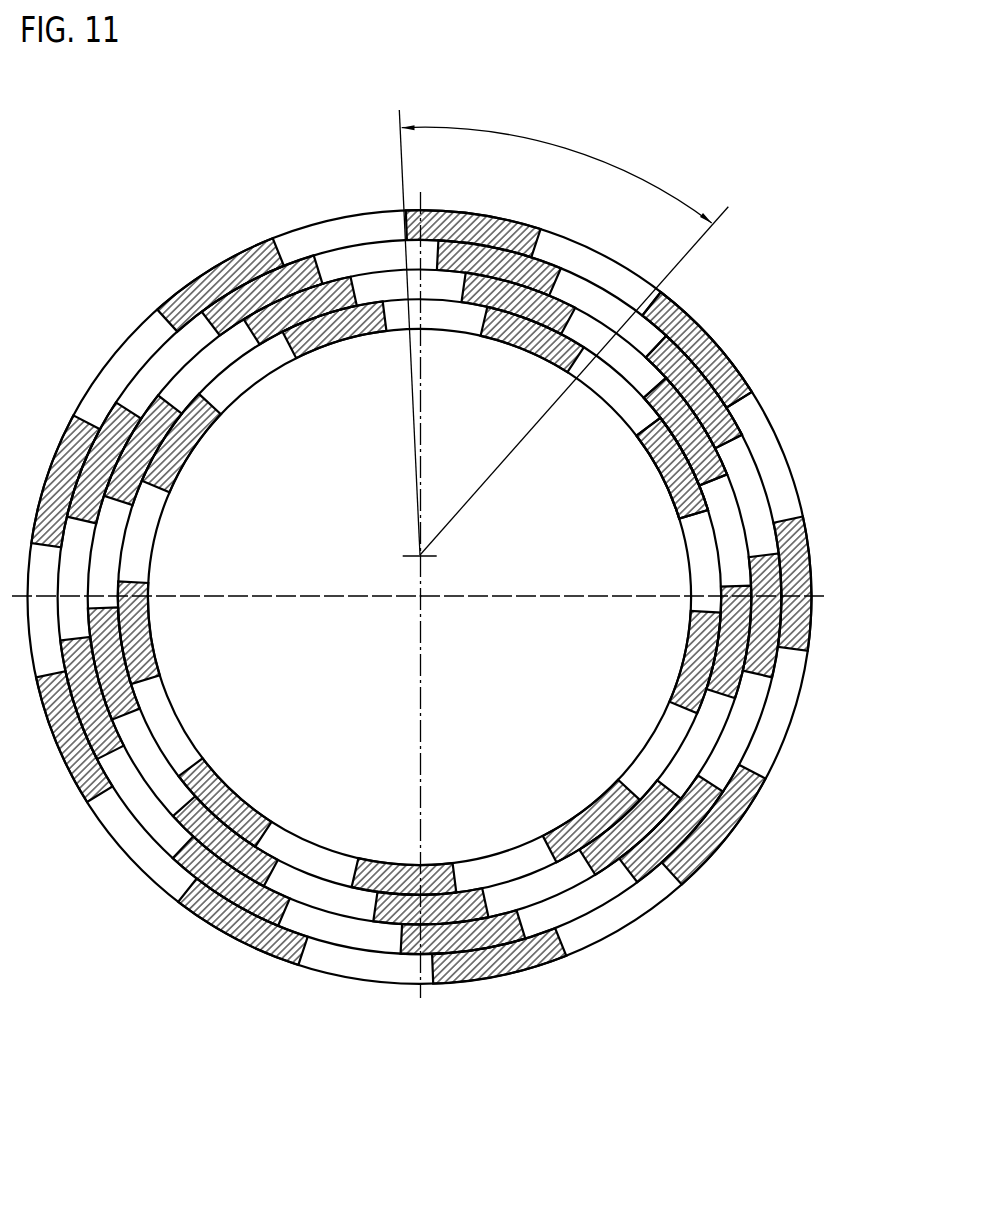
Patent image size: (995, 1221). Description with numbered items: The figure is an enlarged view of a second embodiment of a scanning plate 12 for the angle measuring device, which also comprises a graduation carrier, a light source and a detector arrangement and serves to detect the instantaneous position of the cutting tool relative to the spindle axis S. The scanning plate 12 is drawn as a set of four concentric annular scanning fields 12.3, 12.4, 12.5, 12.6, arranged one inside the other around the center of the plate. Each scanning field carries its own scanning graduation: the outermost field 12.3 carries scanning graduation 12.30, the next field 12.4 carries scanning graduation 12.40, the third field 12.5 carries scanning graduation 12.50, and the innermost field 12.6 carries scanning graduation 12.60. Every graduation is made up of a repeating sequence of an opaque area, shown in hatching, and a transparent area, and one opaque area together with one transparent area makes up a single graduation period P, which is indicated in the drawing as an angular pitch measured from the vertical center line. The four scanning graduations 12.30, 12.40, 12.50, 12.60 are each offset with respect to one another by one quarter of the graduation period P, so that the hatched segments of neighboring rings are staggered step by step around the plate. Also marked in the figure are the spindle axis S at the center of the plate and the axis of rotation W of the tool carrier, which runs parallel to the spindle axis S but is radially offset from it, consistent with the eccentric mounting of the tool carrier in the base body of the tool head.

The scanning plate 12 is at (345, 737).
The scanning field 12.3 is at (82, 403).
The scanning field 12.4 is at (137, 327).
The scanning field 12.5 is at (357, 273).
The scanning field 12.6 is at (397, 295).
The scanning graduation 12.30 is at (707, 325).
The scanning graduation 12.40 is at (737, 365).
The scanning graduation 12.50 is at (728, 413).
The scanning graduation 12.60 is at (713, 472).
The graduation period P is at (563, 332).
The axis of rotation W is at (421, 554).
The spindle axis S is at (422, 596).